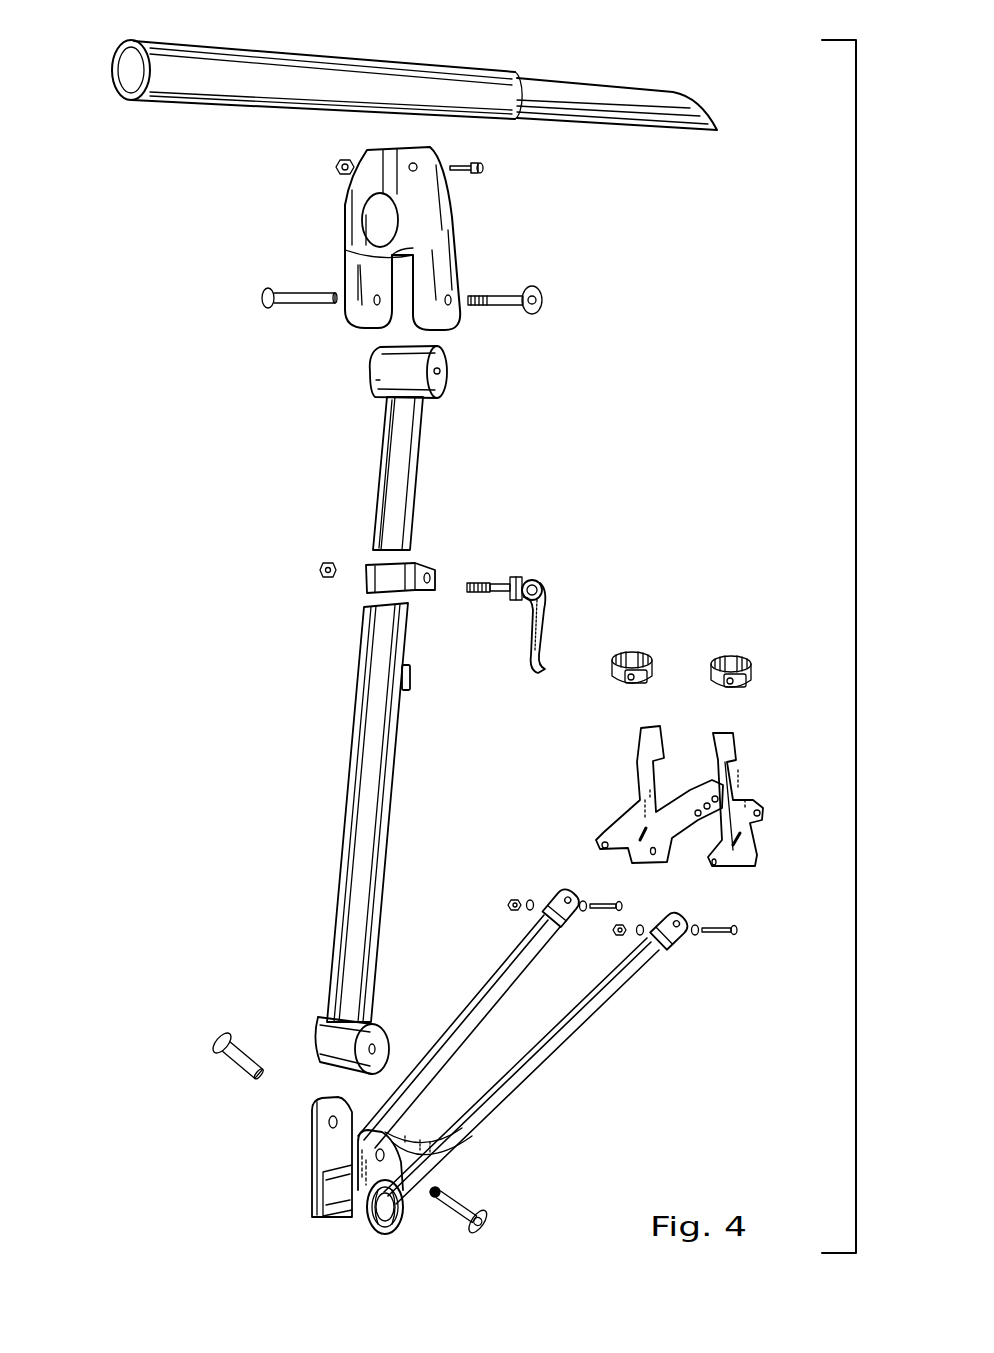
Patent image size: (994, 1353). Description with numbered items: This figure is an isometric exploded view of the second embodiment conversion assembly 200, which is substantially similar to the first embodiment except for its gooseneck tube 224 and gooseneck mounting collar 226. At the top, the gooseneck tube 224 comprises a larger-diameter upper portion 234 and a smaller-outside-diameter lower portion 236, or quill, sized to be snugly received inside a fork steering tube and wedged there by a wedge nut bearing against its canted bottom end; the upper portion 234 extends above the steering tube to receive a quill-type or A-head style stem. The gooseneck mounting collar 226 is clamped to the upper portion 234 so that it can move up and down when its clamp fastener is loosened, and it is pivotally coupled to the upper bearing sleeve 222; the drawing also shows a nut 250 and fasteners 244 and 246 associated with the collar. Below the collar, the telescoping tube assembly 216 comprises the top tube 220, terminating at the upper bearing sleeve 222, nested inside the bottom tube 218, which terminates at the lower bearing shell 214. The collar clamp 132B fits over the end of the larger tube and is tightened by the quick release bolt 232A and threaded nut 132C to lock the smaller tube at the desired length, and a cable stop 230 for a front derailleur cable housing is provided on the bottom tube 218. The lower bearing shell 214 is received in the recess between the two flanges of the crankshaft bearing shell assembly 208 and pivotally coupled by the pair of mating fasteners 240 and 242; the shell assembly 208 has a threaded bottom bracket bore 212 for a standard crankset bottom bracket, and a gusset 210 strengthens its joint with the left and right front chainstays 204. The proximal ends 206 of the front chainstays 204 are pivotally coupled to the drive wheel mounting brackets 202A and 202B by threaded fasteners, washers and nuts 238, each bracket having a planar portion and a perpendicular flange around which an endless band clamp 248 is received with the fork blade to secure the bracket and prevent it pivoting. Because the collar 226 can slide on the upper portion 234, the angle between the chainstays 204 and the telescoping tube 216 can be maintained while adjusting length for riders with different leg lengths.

The conveyor assembly 200 is at (819, 646).
The gooseneck tube 224 is at (488, 40).
The upper portion 234 is at (207, 50).
The lower portion 236 is at (597, 84).
The gooseneck mounting collar 226 is at (345, 197).
The nut 250 is at (336, 167).
The clamp 248 is at (483, 168).
The pin 246 is at (300, 295).
The bolt 244 is at (521, 297).
The upper bearing sleeve 222 is at (370, 372).
The top tube 220 is at (422, 455).
The threaded nut 132C is at (320, 570).
The collar clamp 132B is at (365, 580).
The quick release bolt 232A is at (541, 616).
The cable stop 230 is at (412, 680).
The telescoping tube assembly 216 is at (280, 688).
The bottom tube 218 is at (350, 810).
The lower bearing shell 214 is at (318, 1025).
The mating fastener 242 is at (228, 1060).
The crankshaft bearing shell assembly 208 is at (318, 1150).
The gusset 210 is at (454, 1130).
The bottom bracket bore 212 is at (412, 1190).
The mating fastener 240 is at (487, 1213).
The front chainstays 204 is at (494, 990).
The proximal ends 206 is at (545, 915).
The threaded fasteners, washers and nuts 238 is at (530, 899).
The drive wheel mounting bracket 202B is at (640, 772).
The drive wheel mounting bracket 202A is at (760, 840).